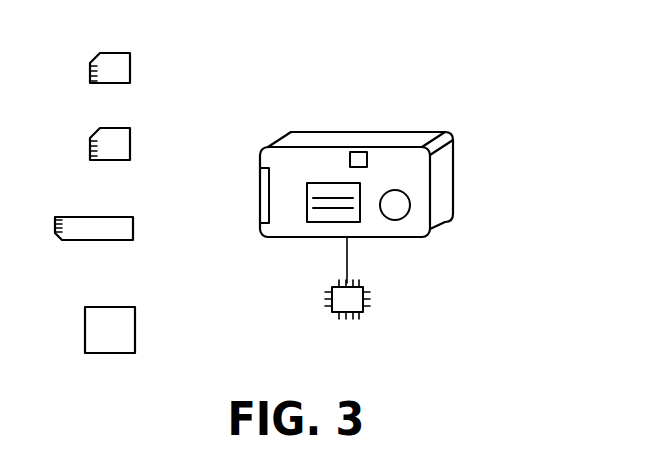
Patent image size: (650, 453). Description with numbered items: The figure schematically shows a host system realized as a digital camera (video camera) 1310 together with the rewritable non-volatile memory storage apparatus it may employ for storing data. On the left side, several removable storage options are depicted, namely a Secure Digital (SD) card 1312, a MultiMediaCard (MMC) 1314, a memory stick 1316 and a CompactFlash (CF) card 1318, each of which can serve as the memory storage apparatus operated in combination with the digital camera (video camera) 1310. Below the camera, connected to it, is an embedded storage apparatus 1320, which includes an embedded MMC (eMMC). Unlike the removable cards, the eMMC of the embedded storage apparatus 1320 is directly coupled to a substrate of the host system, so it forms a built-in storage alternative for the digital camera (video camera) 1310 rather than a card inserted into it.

The digital camera (video camera) 1310 is at (454, 170).
The Secure Digital (SD) card 1312 is at (131, 62).
The MultiMediaCard (MMC) 1314 is at (131, 133).
The memory stick 1316 is at (133, 230).
The CompactFlash (CF) card 1318 is at (135, 325).
The embedded storage apparatus 1320 is at (369, 300).